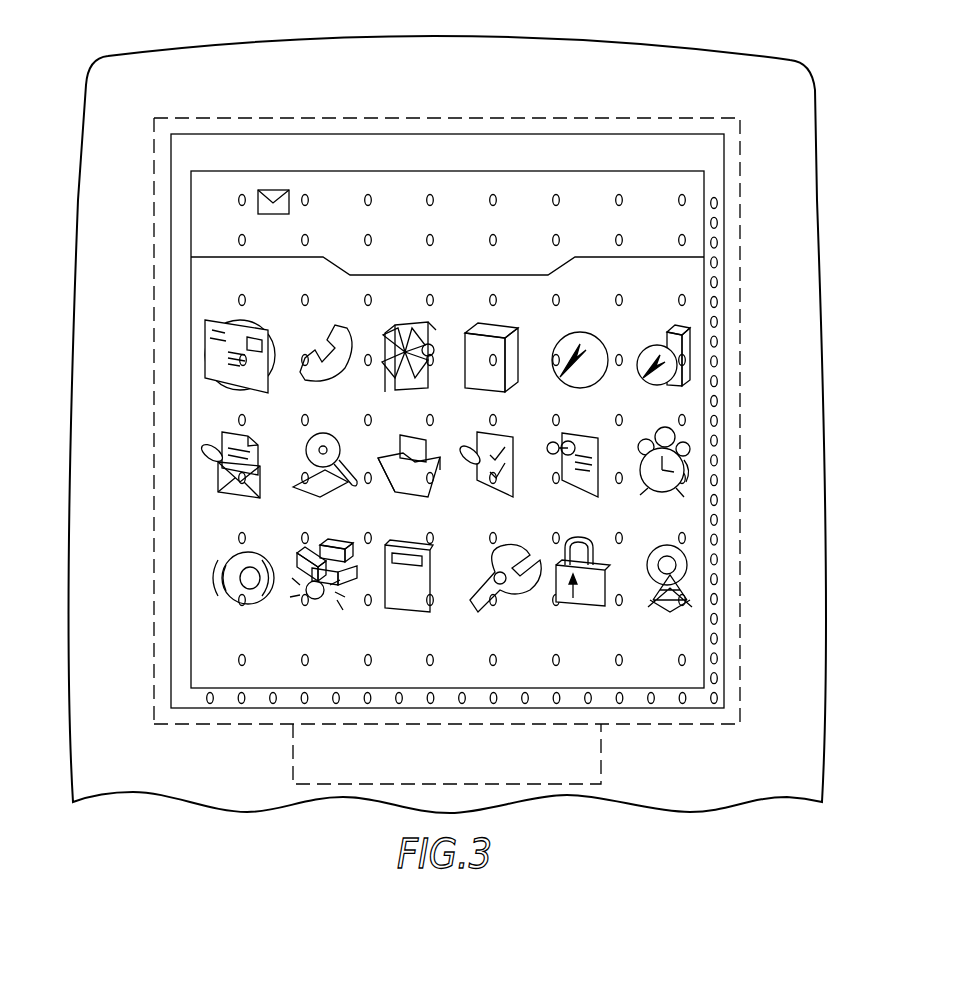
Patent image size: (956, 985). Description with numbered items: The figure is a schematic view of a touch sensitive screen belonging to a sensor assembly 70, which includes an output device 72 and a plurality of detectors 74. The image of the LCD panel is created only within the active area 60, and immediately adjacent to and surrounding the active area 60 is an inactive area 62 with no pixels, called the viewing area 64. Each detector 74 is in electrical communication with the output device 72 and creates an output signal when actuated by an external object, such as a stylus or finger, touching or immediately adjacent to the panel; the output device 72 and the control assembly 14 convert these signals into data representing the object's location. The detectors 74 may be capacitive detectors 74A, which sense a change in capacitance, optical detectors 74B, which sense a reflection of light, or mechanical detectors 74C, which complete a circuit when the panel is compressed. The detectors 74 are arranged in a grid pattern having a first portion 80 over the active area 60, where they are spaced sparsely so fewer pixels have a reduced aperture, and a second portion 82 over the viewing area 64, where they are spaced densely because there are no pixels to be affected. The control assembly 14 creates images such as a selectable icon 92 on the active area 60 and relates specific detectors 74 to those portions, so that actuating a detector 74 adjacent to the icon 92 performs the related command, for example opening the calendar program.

The control assembly 14 is at (208, 58).
The sensor assembly 70 is at (162, 102).
The second portion 82 is at (715, 104).
The inactive area 62 is at (158, 446).
The first portion 80 is at (432, 95).
The viewing area 64 is at (592, 152).
The active area 60 is at (205, 185).
The detectors 74 is at (305, 195).
The capacitive detector 74A is at (718, 222).
The optical detector 74B is at (718, 300).
The mechanical detector 74C is at (718, 340).
The selectable icon 92 is at (227, 325).
The output device 72 is at (302, 758).